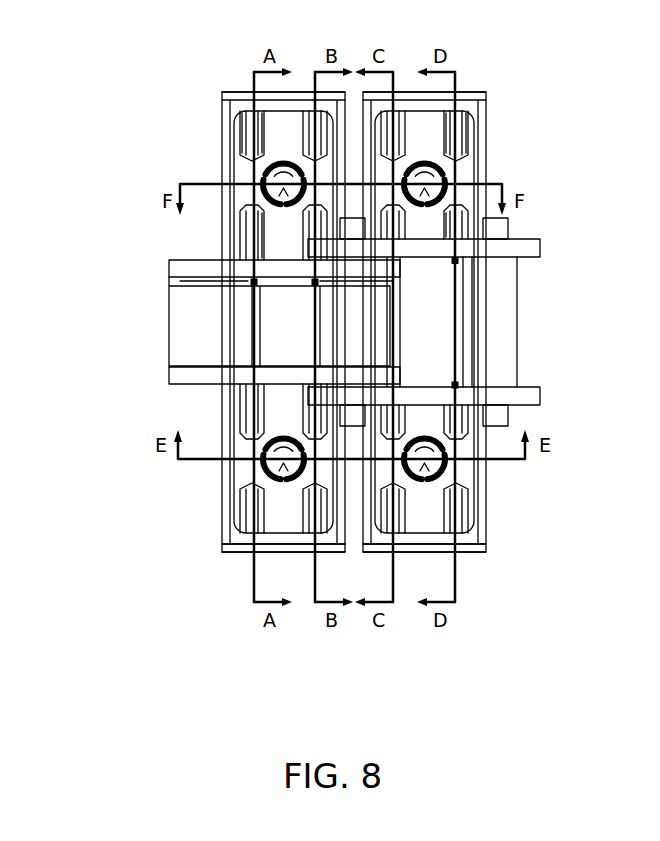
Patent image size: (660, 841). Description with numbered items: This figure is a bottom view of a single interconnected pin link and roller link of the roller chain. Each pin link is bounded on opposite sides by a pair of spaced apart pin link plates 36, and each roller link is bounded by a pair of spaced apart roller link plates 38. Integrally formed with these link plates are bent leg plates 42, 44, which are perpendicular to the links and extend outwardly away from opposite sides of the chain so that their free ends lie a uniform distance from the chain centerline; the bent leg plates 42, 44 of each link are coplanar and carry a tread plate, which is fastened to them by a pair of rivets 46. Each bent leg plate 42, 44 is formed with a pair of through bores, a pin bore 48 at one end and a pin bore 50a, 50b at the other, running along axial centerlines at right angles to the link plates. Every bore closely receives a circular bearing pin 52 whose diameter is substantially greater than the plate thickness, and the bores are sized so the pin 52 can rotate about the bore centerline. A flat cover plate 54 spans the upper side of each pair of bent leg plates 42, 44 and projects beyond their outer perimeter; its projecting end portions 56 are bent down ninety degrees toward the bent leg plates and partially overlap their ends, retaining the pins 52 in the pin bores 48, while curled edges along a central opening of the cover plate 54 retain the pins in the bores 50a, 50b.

The pin link plate 36 is at (540, 247).
The roller link plate 38 is at (168, 270).
The bent leg plate 42 is at (467, 172).
The bent leg plate 44 is at (243, 228).
The rivet 46 is at (285, 480).
The pin bore 48 is at (247, 138).
The pin bore 50a is at (242, 248).
The pin bore 50b is at (470, 228).
The bearing pin 52 is at (247, 207).
The cover plate 54 is at (220, 518).
The projecting end portion 56 is at (238, 92).